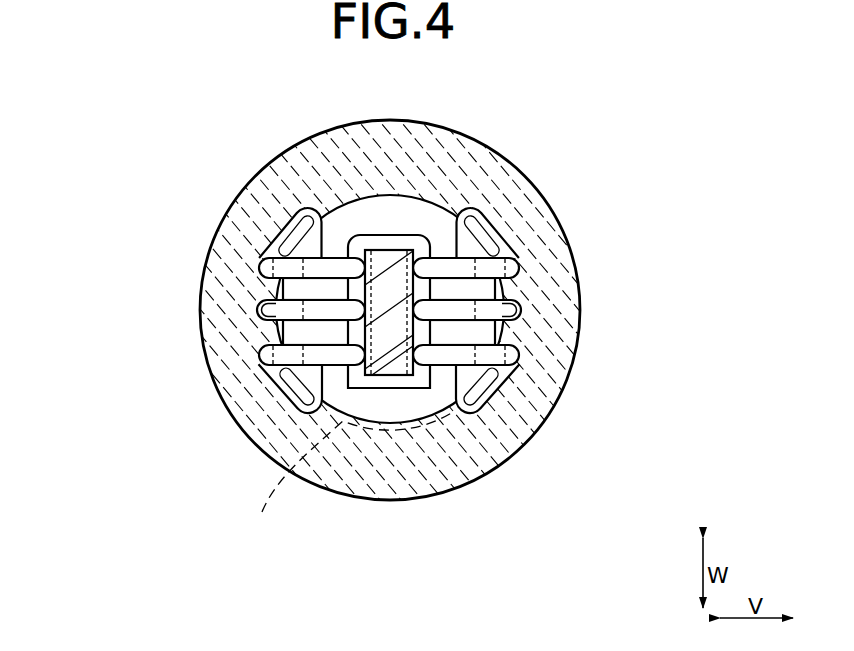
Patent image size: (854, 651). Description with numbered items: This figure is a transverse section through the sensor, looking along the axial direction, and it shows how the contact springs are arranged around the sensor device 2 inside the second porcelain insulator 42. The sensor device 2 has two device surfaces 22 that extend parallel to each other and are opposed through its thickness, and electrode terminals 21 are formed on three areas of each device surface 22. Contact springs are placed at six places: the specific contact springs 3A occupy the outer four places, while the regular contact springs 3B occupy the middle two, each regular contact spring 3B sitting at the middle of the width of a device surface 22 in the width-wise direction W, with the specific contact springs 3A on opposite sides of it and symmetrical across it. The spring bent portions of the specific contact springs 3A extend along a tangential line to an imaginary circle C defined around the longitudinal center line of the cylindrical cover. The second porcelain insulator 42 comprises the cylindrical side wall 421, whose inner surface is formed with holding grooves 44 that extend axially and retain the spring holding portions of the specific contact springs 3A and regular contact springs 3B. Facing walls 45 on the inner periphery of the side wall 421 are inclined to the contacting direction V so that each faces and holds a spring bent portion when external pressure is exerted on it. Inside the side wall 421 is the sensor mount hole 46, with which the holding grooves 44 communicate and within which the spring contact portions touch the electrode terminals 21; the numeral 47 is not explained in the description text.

The sensor device 2 is at (394, 358).
The electrode terminals 21 is at (408, 242).
The device surfaces 22 is at (366, 338).
The specific contact springs 3A is at (497, 240).
The regular contact springs 3B is at (487, 312).
The second porcelain insulator 42 is at (427, 325).
The side wall 421 is at (493, 452).
The holding grooves 44 is at (253, 305).
The facing walls 45 is at (278, 390).
The sensor mount hole 46 is at (353, 237).
The wire end hook 47 is at (463, 211).
The imaginary circle C is at (350, 476).